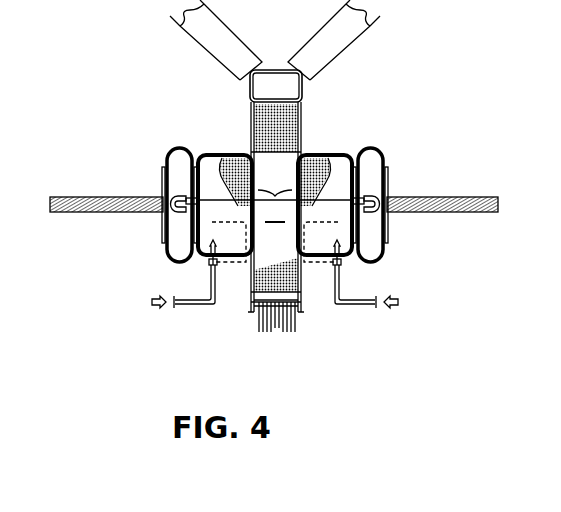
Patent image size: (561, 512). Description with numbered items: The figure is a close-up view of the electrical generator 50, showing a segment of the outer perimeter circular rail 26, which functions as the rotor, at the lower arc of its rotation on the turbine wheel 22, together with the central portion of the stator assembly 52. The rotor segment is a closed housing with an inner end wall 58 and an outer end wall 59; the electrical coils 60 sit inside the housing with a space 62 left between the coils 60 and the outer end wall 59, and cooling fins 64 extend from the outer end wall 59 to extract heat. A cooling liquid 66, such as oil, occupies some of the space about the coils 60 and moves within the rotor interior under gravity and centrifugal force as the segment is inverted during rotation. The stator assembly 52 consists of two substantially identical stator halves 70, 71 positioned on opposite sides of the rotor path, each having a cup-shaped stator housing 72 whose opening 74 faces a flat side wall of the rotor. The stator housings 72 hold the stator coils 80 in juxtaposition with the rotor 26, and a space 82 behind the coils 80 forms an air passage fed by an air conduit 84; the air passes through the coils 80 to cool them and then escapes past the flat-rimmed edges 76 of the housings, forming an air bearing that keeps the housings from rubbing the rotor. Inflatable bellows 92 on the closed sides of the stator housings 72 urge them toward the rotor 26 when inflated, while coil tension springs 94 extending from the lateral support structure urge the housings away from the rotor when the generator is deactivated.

The turbine wheel 22 is at (338, 46).
The outer perimeter circular rail 26 is at (275, 212).
The electrical generator 50 is at (230, 97).
The stator assembly 52 is at (352, 151).
The inner end wall 58 is at (282, 107).
The outer end wall 59 is at (268, 303).
The electrical coils 60 is at (290, 268).
The space 62 is at (285, 300).
The cooling fins 64 is at (282, 330).
The cooling liquid 66 is at (299, 107).
The stator half 70 is at (269, 184).
The stator half 71 is at (337, 150).
The cup-shaped stator housing 72 is at (207, 151).
The opening 74 is at (275, 184).
The edges 76 is at (249, 150).
The stator coils 80 is at (274, 229).
The space 82 is at (275, 193).
The air conduit 84 is at (191, 302).
The inflatable bellows 92 is at (178, 148).
The coil tension springs 94 is at (134, 197).